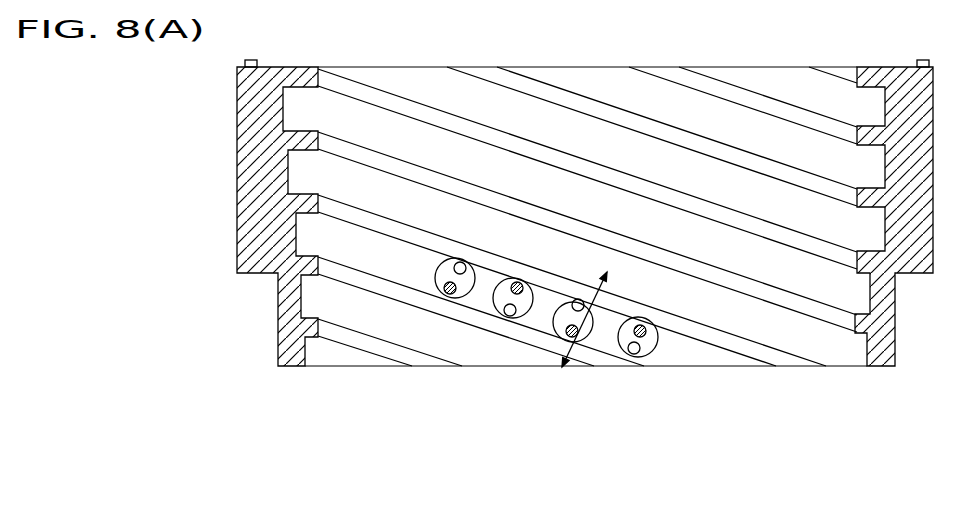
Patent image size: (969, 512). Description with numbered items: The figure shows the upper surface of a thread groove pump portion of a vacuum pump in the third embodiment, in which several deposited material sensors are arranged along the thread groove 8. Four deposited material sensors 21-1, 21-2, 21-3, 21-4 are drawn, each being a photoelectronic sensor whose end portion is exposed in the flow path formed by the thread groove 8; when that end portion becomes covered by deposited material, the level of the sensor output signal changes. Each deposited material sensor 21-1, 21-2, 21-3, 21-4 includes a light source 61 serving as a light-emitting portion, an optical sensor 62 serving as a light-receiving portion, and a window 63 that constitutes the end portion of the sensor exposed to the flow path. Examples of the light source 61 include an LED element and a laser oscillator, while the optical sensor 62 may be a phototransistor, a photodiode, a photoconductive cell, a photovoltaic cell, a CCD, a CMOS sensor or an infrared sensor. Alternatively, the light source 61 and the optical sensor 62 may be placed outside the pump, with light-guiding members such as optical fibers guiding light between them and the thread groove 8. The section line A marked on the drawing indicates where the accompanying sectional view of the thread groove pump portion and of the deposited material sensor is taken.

The thread groove 8 is at (384, 252).
The deposited material sensor 21-1 is at (428, 305).
The deposited material sensor 21-2 is at (533, 285).
The deposited material sensor 21-3 is at (588, 340).
The deposited material sensor 21-4 is at (660, 356).
The light source 61 is at (447, 283).
The optical sensor 62 is at (458, 262).
The window 63 is at (470, 265).
The section line A- A is at (591, 325).